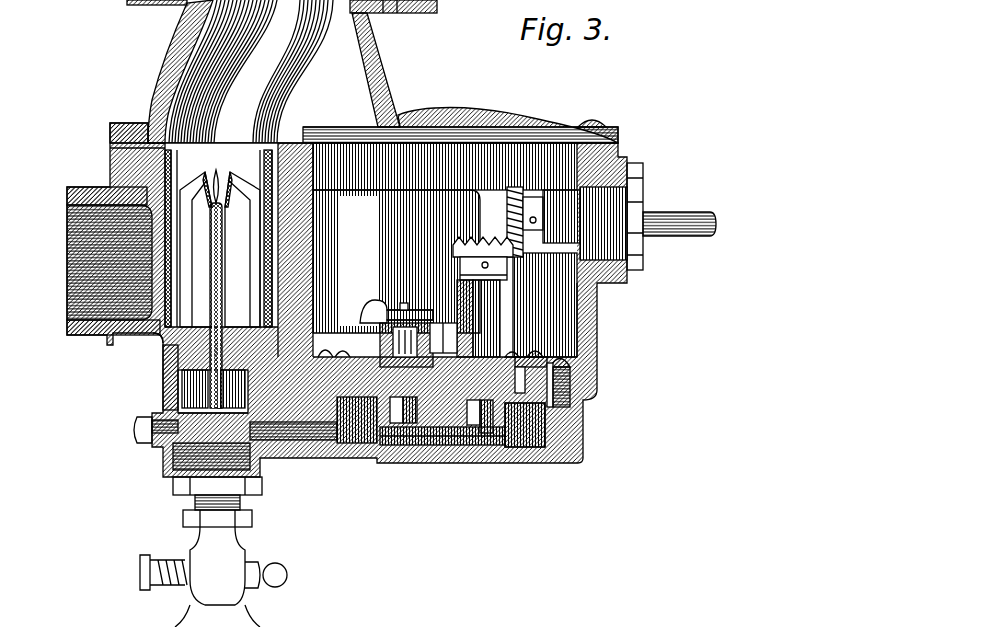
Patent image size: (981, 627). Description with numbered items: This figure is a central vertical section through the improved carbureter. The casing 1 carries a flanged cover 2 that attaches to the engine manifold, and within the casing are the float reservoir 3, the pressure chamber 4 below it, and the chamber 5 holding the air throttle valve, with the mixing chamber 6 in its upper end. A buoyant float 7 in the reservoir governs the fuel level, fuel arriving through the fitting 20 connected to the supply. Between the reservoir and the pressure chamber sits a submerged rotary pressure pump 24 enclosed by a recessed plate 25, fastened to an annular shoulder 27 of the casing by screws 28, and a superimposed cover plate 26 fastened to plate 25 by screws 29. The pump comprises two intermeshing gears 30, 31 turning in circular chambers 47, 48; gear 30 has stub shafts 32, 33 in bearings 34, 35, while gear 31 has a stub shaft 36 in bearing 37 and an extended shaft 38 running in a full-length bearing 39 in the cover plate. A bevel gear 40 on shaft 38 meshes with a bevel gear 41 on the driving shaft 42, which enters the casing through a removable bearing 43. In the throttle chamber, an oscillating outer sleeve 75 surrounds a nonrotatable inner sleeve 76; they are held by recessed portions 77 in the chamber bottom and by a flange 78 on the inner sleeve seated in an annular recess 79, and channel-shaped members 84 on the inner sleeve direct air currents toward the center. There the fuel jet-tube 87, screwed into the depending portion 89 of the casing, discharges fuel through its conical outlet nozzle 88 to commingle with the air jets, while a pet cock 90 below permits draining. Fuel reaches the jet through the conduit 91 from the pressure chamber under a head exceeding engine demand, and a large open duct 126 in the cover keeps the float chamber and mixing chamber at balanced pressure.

The casing 1 is at (583, 438).
The flanged cover 2 is at (470, 111).
The float reservoir 3 is at (500, 155).
The pressure chamber 4 is at (458, 438).
The chamber 5 is at (112, 173).
The mixing chamber 6 is at (216, 195).
The float 7 is at (438, 200).
The fitting 20 is at (240, 503).
The submerged pressure pump 24 is at (445, 336).
The recessed plate 25 is at (578, 421).
The superimposed plate 26 is at (560, 352).
The annular shoulder 27 is at (571, 377).
The screws 28 is at (547, 362).
The screws 29 is at (540, 352).
The gear 30 is at (377, 324).
The pump gear 31 is at (517, 355).
The stub shaft 32 is at (400, 425).
The stub shaft 33 is at (376, 302).
The bearing 34 is at (383, 445).
The bearing 35 is at (406, 305).
The stub shaft 36 is at (467, 413).
The bearing 37 is at (494, 430).
The extended shaft 38 is at (493, 313).
The full length bearing 39 is at (506, 321).
The bevel gear 40 is at (507, 240).
The bevel gear 41 is at (520, 197).
The driving shaft 42 is at (673, 215).
The removable bearing 43 is at (640, 263).
The circular chamber 47 is at (290, 394).
The circular chamber 48 is at (525, 425).
The outer sleeve 75 is at (180, 277).
The inner sleeve 76 is at (273, 168).
The recessed portions 77 is at (180, 357).
The flange 78 is at (148, 122).
The annular recess 79 is at (112, 145).
The channel shaped members 84 is at (180, 300).
The fuel jet-tube 87 is at (224, 318).
The outlet nozzle 88 is at (213, 188).
The depending portion 89 is at (160, 410).
The pet cock 90 is at (190, 545).
The conduit 91 is at (300, 440).
The open duct 126 is at (357, 97).